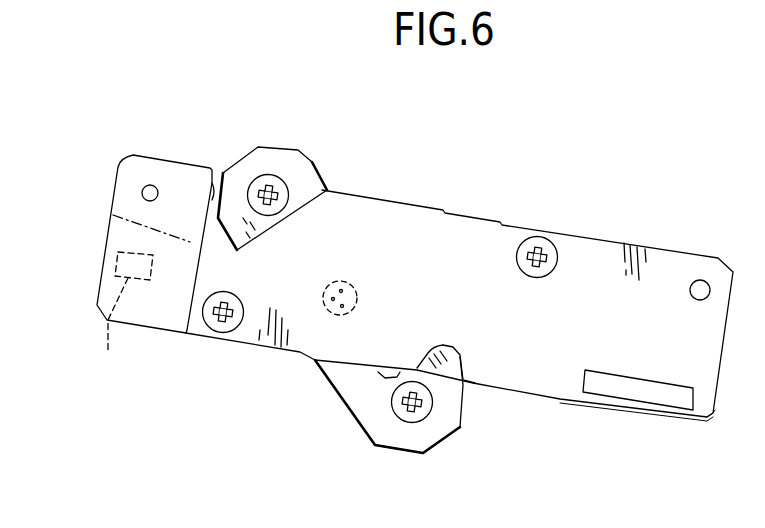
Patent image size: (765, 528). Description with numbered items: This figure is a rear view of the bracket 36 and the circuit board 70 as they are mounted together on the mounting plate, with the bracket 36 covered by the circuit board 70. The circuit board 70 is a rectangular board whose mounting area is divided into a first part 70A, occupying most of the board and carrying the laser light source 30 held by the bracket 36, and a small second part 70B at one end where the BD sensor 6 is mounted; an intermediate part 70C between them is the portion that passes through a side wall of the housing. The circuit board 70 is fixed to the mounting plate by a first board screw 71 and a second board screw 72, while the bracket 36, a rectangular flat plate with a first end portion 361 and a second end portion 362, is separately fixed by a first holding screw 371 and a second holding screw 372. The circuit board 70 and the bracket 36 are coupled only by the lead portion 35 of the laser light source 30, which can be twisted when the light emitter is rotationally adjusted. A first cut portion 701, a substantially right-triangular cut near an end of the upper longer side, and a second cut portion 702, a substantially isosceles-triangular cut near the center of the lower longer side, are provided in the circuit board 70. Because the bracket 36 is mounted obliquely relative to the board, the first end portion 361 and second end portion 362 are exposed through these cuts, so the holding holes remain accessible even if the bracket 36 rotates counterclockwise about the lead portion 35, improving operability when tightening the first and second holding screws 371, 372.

The BD sensor 6 is at (128, 319).
The laser light source 30 is at (355, 293).
The lead portion 35 is at (340, 307).
The bracket 36 is at (340, 296).
The circuit board 70 is at (371, 245).
The first part 70A is at (385, 198).
The second part 70B is at (149, 201).
The intermediate part 70C is at (110, 214).
The first board screw 71 is at (552, 250).
The second board screw 72 is at (213, 323).
The first end portion 361 is at (278, 148).
The second end portion 362 is at (410, 443).
The first holding screw 371 is at (283, 187).
The second holding screw 372 is at (433, 415).
The first cut portion 701 is at (212, 175).
The second cut portion 702 is at (462, 366).